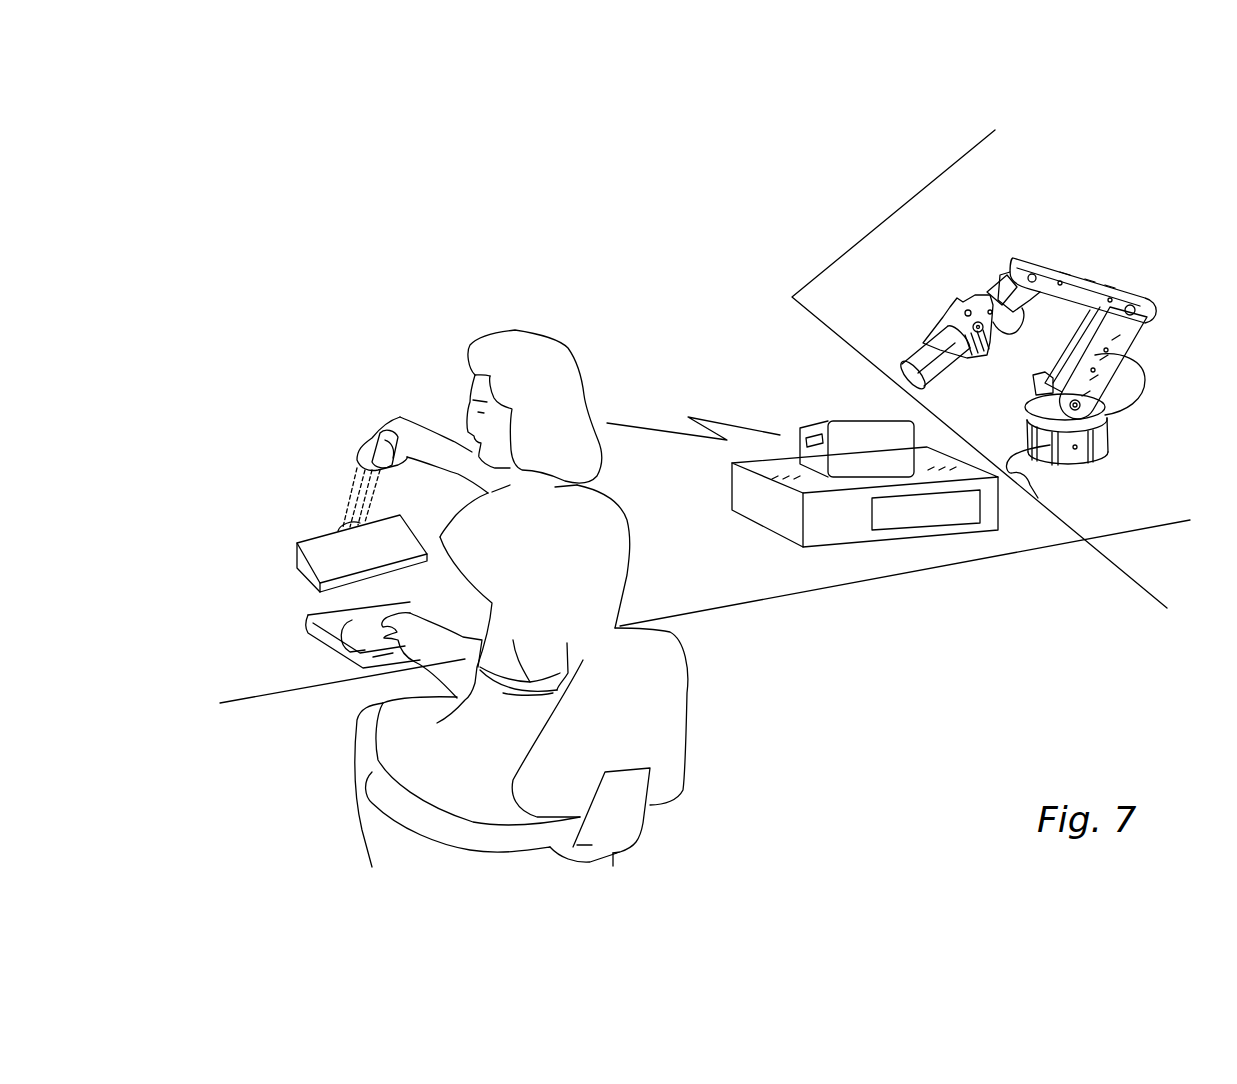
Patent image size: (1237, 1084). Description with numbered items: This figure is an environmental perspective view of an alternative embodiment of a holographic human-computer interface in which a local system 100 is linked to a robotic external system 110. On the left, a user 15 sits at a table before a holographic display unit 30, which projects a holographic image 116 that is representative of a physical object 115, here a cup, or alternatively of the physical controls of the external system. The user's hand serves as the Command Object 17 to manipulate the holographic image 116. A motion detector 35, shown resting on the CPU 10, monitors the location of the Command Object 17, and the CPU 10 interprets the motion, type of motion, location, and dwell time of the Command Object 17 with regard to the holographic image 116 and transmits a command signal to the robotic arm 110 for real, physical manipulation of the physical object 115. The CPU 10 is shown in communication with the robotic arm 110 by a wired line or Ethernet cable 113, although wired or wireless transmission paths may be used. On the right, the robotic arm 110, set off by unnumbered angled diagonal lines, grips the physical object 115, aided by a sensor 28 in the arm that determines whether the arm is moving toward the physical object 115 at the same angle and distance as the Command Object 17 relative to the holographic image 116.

The local system 100 is at (748, 264).
The user 15 is at (572, 348).
The Command Object 17 is at (400, 417).
The holographic image 116 is at (357, 463).
The holographic display unit 30 is at (297, 545).
The central processing unit (CPU) 10 is at (952, 457).
The motion detector 35 is at (828, 421).
The Ethernet cable 113 is at (1043, 500).
The external system 110 is at (1102, 247).
The sensor 28 is at (920, 338).
The physical object 115 is at (912, 360).